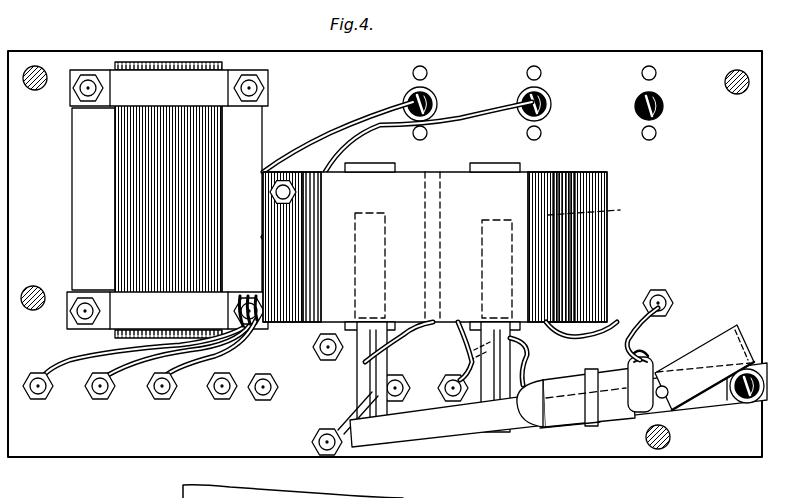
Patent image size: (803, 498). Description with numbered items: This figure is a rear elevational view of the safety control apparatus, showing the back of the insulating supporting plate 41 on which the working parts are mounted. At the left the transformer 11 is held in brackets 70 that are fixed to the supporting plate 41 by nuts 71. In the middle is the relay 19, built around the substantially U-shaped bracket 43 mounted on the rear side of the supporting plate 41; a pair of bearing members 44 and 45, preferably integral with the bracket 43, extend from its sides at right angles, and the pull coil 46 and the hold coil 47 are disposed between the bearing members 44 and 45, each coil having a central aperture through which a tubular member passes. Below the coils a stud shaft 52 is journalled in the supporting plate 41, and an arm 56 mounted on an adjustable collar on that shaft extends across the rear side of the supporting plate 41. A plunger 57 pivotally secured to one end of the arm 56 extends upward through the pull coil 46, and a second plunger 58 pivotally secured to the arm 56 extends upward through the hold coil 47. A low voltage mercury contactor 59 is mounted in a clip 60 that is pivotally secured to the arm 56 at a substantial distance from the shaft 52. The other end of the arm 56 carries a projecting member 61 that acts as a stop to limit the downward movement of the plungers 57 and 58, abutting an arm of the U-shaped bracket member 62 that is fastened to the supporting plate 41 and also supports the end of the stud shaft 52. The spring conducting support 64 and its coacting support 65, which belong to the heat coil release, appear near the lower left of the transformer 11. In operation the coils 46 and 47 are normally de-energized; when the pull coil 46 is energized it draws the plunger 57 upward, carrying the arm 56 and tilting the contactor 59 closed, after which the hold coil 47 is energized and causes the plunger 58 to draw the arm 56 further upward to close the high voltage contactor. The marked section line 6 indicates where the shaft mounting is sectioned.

The transformer 11 is at (174, 182).
The relay 19 is at (457, 233).
The supporting plate 41 is at (598, 64).
The bracket 43 is at (538, 185).
The bearing member 44 is at (380, 169).
The bearing member 45 is at (495, 168).
The pull coil 46 is at (312, 252).
The hold coil 47 is at (615, 234).
The stud shaft 52 is at (665, 398).
The arm 56 is at (418, 425).
The plunger 57 is at (372, 362).
The second plunger 58 is at (480, 358).
The mercury contactor 59 is at (562, 386).
The clip 60 is at (604, 401).
The projecting member 61 is at (752, 405).
The U-shaped bracket member 62 is at (720, 345).
The spring conducting support 64 is at (100, 337).
The support 65 is at (68, 320).
The brackets 70 is at (196, 82).
The nuts 71 is at (89, 82).
The section line 6- 6 is at (662, 270).